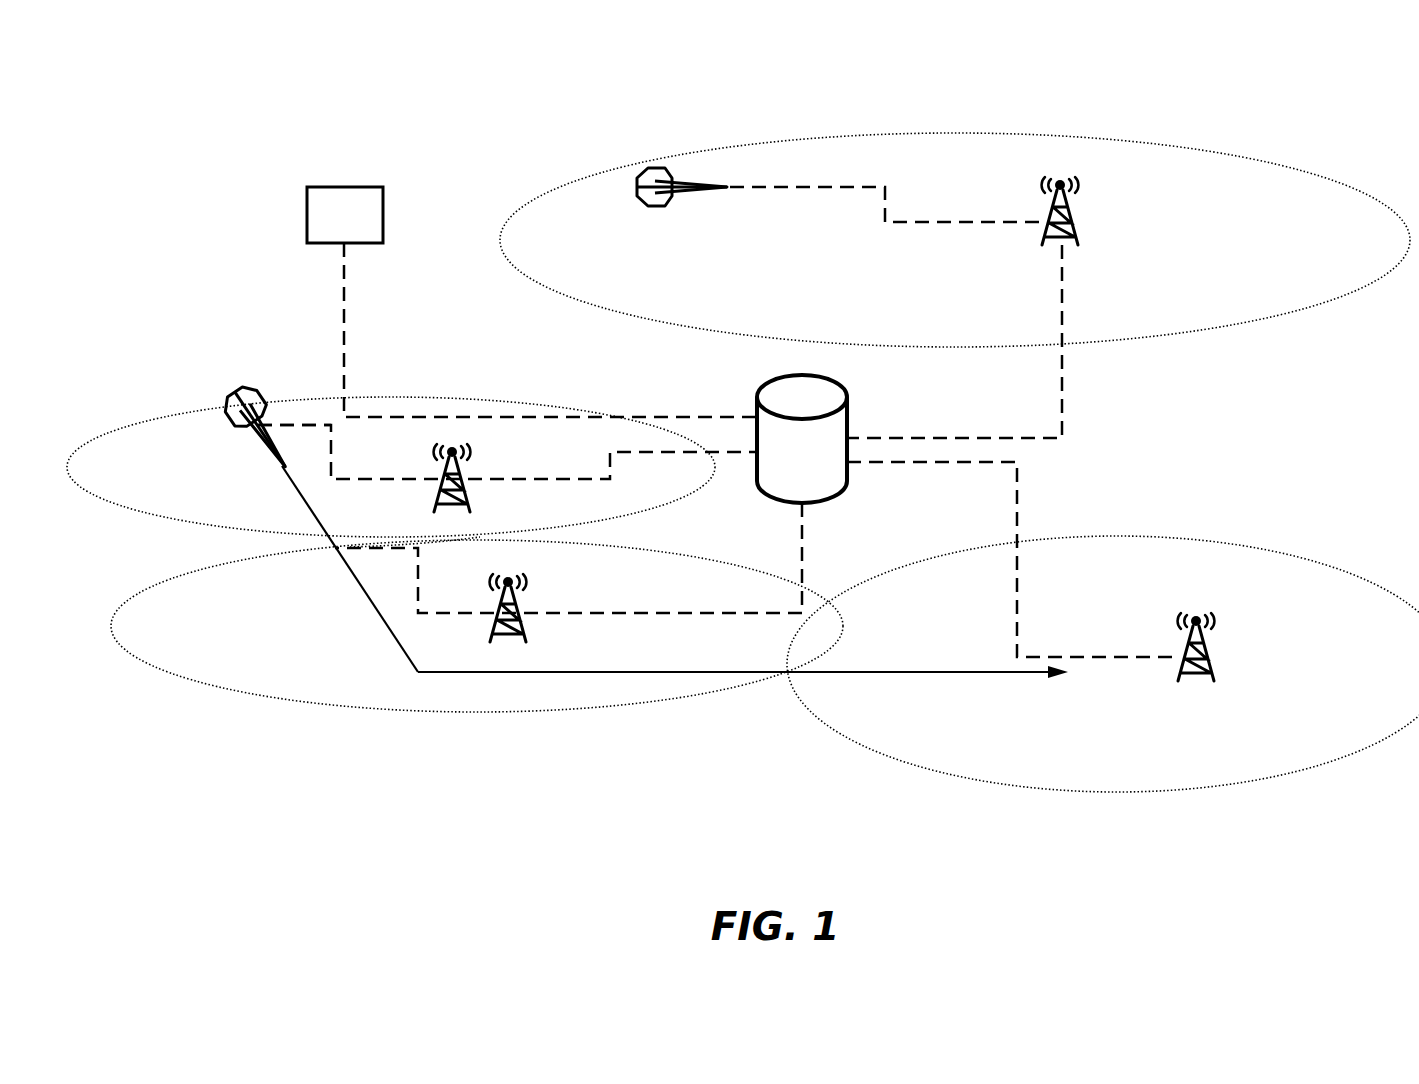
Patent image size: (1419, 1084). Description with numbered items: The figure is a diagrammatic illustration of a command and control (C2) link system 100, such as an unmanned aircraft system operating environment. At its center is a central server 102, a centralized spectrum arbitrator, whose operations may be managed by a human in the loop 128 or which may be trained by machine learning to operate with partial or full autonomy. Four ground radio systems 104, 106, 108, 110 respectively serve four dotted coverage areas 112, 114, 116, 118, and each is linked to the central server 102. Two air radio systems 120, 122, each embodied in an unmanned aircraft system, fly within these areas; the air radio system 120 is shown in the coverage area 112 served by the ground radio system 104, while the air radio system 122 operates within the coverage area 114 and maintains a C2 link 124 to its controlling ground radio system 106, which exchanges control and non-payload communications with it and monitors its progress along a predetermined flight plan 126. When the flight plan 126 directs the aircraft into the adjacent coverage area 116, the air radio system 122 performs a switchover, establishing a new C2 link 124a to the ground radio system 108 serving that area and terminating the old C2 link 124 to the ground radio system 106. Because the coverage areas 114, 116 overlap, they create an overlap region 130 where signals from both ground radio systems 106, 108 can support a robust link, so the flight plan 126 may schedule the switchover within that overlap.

The C2 link system 100 is at (180, 131).
The central server 102 is at (782, 466).
The ground radio system 104 is at (1068, 220).
The ground radio system 106 is at (451, 446).
The ground radio system 108 is at (510, 636).
The ground radio system 110 is at (1202, 614).
The coverage area 112 is at (1300, 257).
The coverage area 114 is at (117, 492).
The coverage area 116 is at (192, 650).
The coverage area 118 is at (1340, 674).
The air radio system 120 is at (681, 180).
The air radio system 122 is at (238, 398).
The C2 link 124 is at (318, 424).
The new C2 link 124a is at (417, 584).
The flight plan 126 is at (440, 674).
The human in the loop 128 is at (325, 229).
The overlap region 130 is at (470, 543).